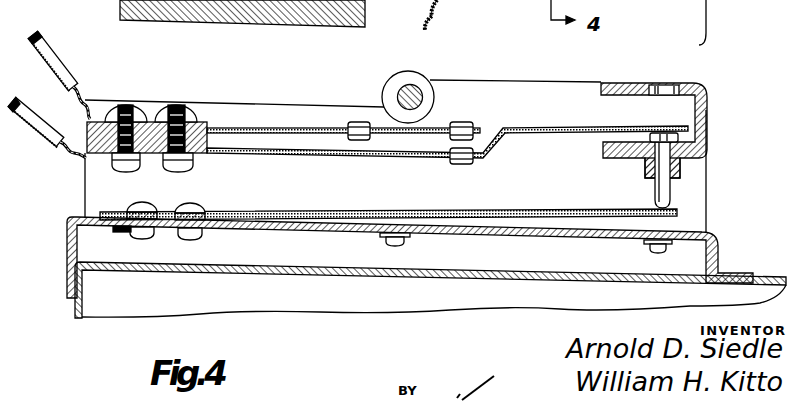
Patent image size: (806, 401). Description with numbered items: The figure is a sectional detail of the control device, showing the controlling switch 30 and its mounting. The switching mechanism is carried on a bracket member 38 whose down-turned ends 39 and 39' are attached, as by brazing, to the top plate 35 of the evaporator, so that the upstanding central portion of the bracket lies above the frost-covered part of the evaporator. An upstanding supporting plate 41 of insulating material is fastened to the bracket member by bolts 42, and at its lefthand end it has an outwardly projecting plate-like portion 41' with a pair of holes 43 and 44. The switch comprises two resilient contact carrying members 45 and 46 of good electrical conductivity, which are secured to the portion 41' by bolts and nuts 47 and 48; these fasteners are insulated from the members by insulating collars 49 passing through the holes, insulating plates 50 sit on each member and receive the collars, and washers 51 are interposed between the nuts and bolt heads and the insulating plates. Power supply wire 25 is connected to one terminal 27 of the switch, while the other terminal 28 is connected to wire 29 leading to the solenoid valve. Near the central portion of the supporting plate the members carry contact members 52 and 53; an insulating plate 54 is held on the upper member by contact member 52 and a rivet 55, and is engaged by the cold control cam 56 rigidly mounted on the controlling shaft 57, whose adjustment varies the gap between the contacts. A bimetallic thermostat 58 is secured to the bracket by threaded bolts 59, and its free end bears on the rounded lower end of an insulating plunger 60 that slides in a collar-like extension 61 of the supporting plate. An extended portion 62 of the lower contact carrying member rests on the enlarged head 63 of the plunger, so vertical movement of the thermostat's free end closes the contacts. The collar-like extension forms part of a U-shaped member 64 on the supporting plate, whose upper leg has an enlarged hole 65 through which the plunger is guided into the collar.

The power supply wire 25 is at (54, 48).
The terminal 27 is at (99, 122).
The terminal 28 is at (83, 162).
The wire 29 is at (28, 125).
The controlling switch 30 is at (452, 146).
The top plate 35 is at (370, 275).
The bracket member 38 is at (549, 238).
The down-turned end 39 is at (744, 249).
The down-turned end 39' is at (42, 250).
The supporting plate 41 is at (395, 136).
The plate-like portion 41' is at (58, 104).
The bolts 42 is at (406, 243).
The hole 43 is at (99, 153).
The hole 44 is at (214, 150).
The contact carrying member 45 is at (293, 127).
The contact carrying member 46 is at (310, 157).
The bolt and nut 47 is at (124, 108).
The bolt and nut 48 is at (140, 165).
The insulating collar 49 is at (156, 120).
The insulating plate 50 is at (206, 128).
The washer 51 is at (199, 120).
The contact member 52 is at (469, 122).
The contact member 53 is at (463, 164).
The insulating plate 54 is at (383, 127).
The rivet 55 is at (357, 123).
The cold control cam 56 is at (398, 82).
The controlling shaft 57 is at (419, 90).
The bimetallic thermostat 58 is at (563, 212).
The threaded bolts 59 is at (148, 240).
The insulating plunger 60 is at (672, 195).
The collar-like extension 61 is at (682, 166).
The extended portion 62 is at (533, 130).
The enlarged head 63 is at (680, 138).
The U-shaped member 64 is at (708, 112).
The enlarged hole 65 is at (668, 86).